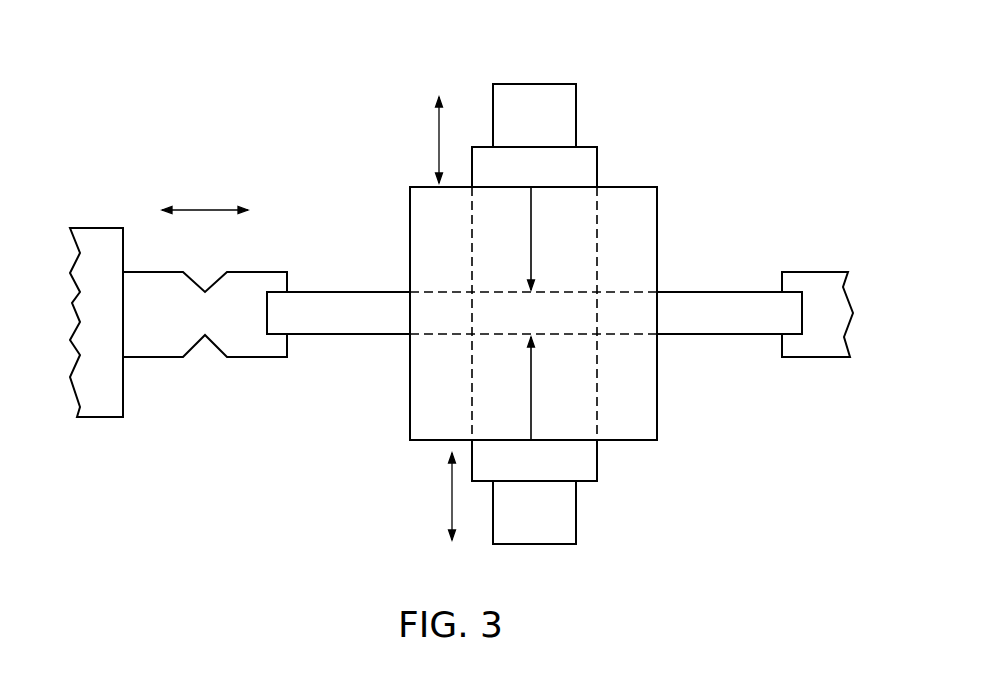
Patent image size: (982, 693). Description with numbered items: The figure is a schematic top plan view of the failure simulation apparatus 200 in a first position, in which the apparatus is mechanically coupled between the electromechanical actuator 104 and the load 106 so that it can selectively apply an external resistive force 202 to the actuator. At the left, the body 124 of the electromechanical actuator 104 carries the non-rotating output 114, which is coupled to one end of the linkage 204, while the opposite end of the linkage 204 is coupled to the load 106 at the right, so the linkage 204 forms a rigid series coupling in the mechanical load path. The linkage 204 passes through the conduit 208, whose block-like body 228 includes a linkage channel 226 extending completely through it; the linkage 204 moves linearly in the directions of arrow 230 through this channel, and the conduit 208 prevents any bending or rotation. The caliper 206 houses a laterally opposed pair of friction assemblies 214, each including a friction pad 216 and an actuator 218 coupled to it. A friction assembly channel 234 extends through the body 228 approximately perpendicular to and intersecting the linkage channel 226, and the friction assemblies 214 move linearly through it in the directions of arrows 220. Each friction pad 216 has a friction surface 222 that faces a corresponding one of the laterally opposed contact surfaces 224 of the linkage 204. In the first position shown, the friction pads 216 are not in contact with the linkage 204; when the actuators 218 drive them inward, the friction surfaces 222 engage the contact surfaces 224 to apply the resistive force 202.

The electromechanical actuator 104 is at (84, 295).
The load 106 is at (815, 357).
The output 114 is at (157, 357).
The body 124 is at (93, 417).
The failure simulation apparatus 200 is at (530, 306).
The resistive force 202 is at (531, 223).
The linkage 204 is at (353, 334).
The caliper 206 is at (463, 344).
The conduit 208 is at (410, 225).
The friction assembly 214 is at (511, 306).
The friction pad 216 is at (597, 167).
The actuator 218 is at (576, 115).
The arrow 220 is at (439, 140).
The friction surface 222 is at (512, 188).
The contact surface 224 is at (570, 290).
The linkage channel 226 is at (452, 334).
The body 228 is at (657, 212).
The arrow 230 is at (203, 210).
The friction assembly channel 234 is at (597, 252).